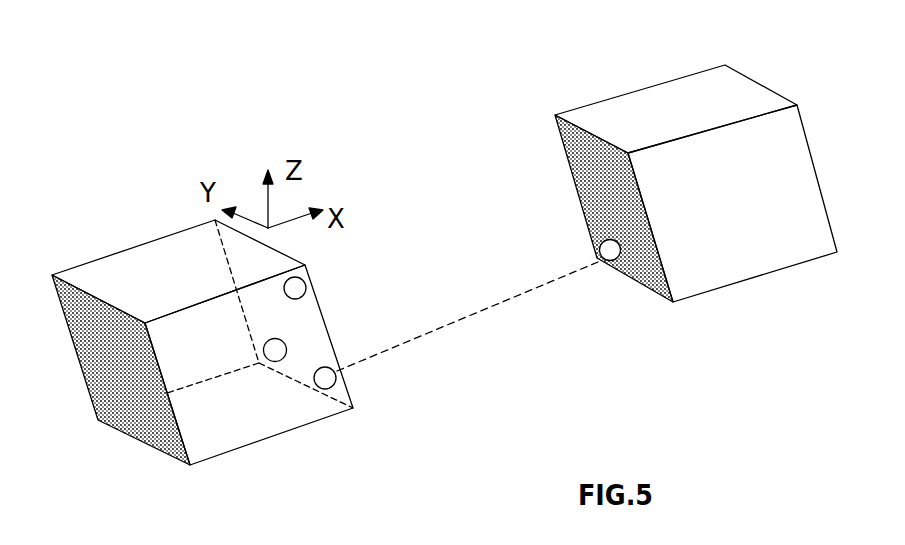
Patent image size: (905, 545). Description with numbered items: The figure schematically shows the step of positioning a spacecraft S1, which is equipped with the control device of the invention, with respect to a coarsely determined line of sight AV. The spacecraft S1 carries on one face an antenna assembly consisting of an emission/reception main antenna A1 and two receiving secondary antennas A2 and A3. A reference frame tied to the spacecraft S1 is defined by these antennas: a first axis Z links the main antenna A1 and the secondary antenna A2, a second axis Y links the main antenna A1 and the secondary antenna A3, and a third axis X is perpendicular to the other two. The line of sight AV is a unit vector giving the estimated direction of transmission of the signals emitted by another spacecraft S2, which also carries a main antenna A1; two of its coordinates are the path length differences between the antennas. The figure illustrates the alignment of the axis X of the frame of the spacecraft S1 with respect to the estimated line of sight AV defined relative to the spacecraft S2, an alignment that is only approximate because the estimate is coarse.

The spacecraft S1 is at (118, 250).
The other spacecraft S2 is at (638, 90).
The main antenna A1 is at (325, 390).
The secondary antenna A2 is at (306, 296).
The secondary antenna A3 is at (275, 362).
The line of sight AV is at (438, 328).